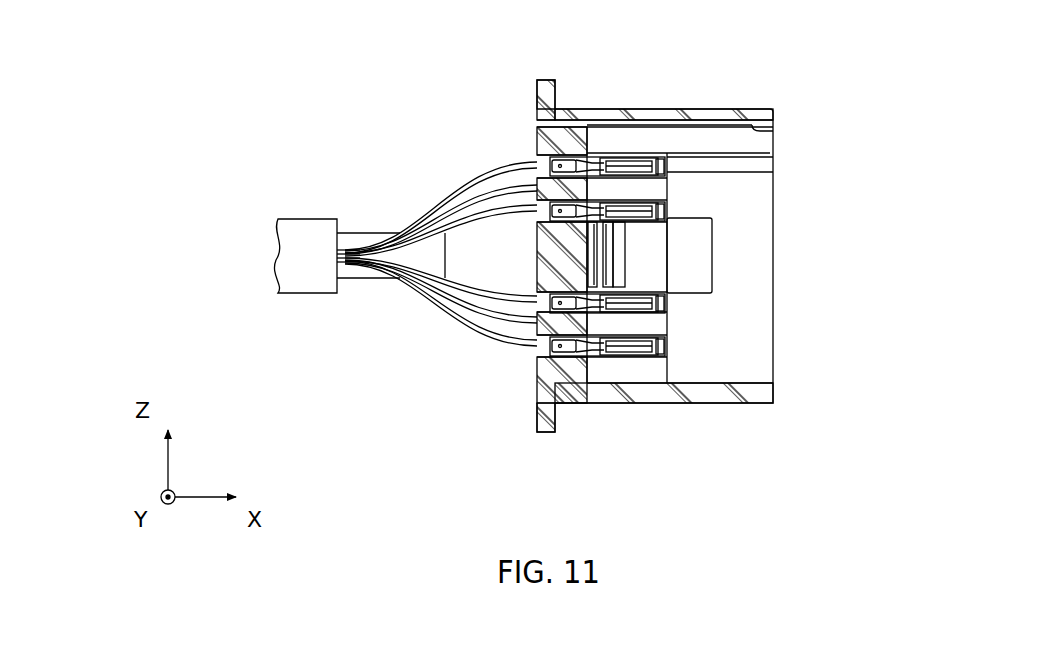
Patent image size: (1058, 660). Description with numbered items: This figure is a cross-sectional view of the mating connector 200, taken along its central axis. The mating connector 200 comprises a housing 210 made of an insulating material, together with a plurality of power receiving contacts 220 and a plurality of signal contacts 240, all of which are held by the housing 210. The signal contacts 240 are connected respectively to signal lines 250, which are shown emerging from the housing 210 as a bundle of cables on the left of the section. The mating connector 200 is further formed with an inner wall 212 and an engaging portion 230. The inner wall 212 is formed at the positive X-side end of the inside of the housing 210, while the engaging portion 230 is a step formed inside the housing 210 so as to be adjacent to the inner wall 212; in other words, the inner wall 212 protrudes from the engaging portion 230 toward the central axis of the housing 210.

The mating connector 200 is at (826, 84).
The housing 210 is at (588, 108).
The inner wall 212 is at (773, 130).
The power receiving contacts 220 is at (697, 262).
The engaging portion 230 is at (722, 110).
The signal contacts 240 is at (612, 352).
The signal lines 250 is at (458, 318).